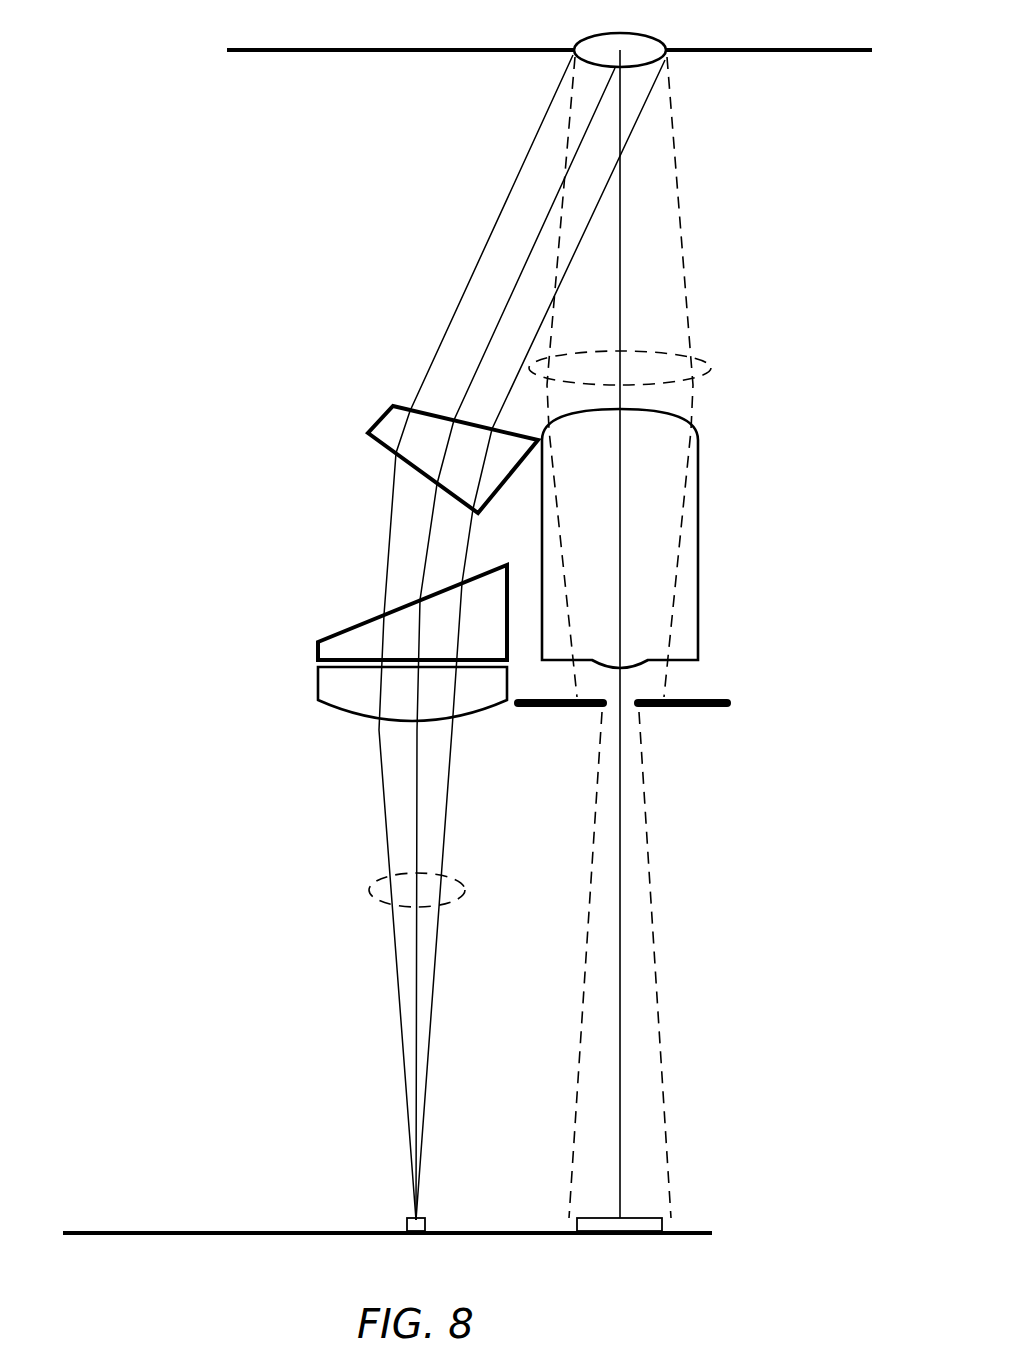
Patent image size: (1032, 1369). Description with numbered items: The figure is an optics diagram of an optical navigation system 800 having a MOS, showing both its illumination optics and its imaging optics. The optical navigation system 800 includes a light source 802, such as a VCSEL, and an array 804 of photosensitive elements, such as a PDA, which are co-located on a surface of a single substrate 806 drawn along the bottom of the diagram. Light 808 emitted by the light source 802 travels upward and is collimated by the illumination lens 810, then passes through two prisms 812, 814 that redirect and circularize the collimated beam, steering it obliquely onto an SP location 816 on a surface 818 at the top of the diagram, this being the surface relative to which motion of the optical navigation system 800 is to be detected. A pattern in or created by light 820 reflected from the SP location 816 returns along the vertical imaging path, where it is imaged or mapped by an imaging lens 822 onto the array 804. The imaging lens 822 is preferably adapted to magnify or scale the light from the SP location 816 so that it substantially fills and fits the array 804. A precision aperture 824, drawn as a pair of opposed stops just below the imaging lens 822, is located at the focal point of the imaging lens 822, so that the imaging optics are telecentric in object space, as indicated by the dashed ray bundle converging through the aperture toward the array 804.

The optical navigation system 800 is at (430, 205).
The light source 802 is at (426, 1226).
The array of photosensitive elements 804 is at (663, 1226).
The substrate 806 is at (110, 1231).
The light 808 is at (369, 888).
The illumination lens 810 is at (318, 700).
The prism 812 is at (318, 650).
The prism 814 is at (368, 430).
The SP location 816 is at (662, 42).
The surface 818 is at (404, 52).
The reflected light 820 is at (713, 368).
The imaging lens 822 is at (699, 462).
The precision aperture 824 is at (728, 703).